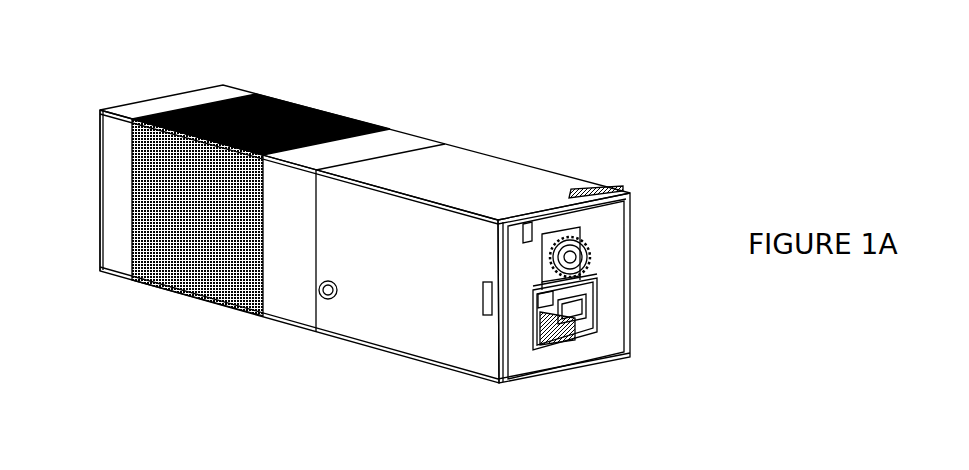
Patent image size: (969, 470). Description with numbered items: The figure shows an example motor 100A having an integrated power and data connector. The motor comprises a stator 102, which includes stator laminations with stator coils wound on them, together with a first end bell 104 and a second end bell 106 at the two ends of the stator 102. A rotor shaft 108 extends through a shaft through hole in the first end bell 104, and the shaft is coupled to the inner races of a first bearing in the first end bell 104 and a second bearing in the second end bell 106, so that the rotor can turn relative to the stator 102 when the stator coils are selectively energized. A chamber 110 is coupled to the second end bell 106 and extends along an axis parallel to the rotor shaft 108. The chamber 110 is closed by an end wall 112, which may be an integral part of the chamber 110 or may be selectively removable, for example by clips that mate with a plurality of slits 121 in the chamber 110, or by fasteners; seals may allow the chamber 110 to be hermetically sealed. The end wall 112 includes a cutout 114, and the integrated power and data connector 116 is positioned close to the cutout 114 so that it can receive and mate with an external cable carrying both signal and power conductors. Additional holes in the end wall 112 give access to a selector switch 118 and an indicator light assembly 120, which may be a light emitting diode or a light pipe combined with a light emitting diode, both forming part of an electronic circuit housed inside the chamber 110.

The motor 100A is at (487, 62).
The stator 102 is at (180, 293).
The first end bell 104 is at (178, 100).
The second end bell 106 is at (382, 148).
The rotor shaft 108 is at (93, 150).
The chamber 110 is at (497, 172).
The end wall 112 is at (620, 320).
The cutout 114 is at (577, 337).
The integrated power and data connector 116 is at (545, 320).
The selector switch 118 is at (572, 257).
The indicator light assembly 120 is at (590, 188).
The slits 121 is at (532, 223).